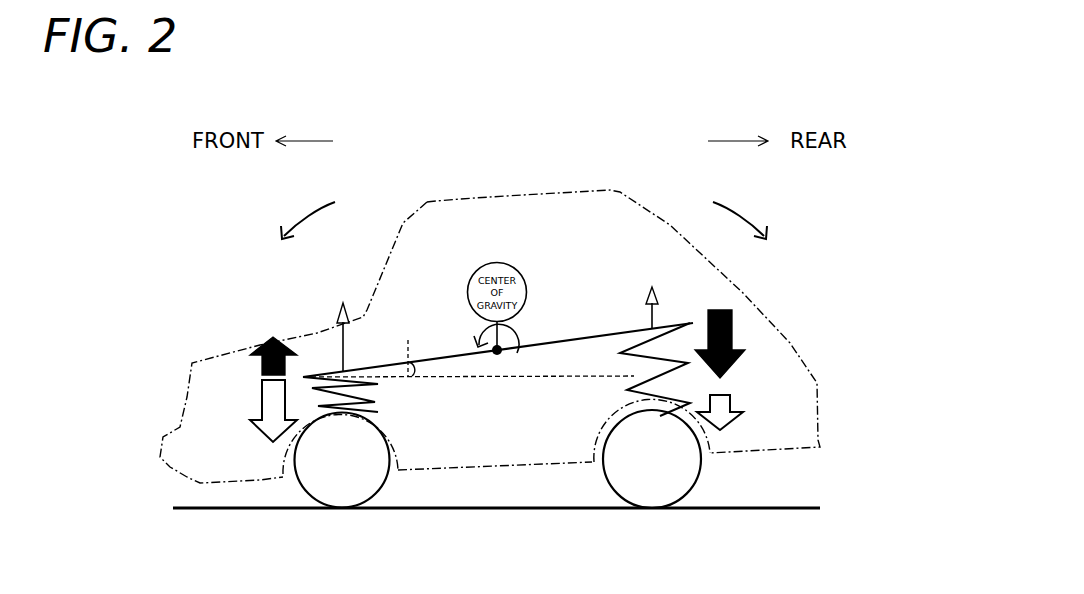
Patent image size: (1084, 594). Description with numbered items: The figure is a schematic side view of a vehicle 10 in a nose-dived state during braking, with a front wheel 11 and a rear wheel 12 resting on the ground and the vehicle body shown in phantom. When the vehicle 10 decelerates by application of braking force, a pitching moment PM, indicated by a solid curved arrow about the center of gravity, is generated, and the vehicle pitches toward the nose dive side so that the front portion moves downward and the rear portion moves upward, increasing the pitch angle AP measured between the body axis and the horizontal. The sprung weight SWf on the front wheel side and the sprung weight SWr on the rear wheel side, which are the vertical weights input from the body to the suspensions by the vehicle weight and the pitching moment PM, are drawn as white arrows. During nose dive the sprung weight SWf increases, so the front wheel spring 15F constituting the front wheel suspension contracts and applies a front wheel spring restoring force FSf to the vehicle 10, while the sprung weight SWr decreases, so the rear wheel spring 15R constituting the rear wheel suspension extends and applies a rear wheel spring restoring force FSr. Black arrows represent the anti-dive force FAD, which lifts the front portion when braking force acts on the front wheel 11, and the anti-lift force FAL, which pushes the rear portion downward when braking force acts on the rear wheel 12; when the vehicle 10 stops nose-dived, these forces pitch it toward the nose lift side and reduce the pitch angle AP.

The vehicle 10 is at (745, 295).
The front wheel 11 is at (316, 508).
The rear wheel 12 is at (628, 508).
The front wheel spring 15F is at (366, 389).
The rear wheel spring 15R is at (625, 392).
The anti-dive force FAD is at (255, 353).
The anti-lift force FAL is at (735, 340).
The sprung weight on the front wheel side SWf is at (262, 401).
The sprung weight on the rear wheel side SWr is at (733, 398).
The front wheel spring restoring force FSf is at (341, 327).
The rear wheel spring restoring force FSr is at (650, 313).
The pitch angle AP is at (419, 346).
The pitching moment PM is at (516, 340).